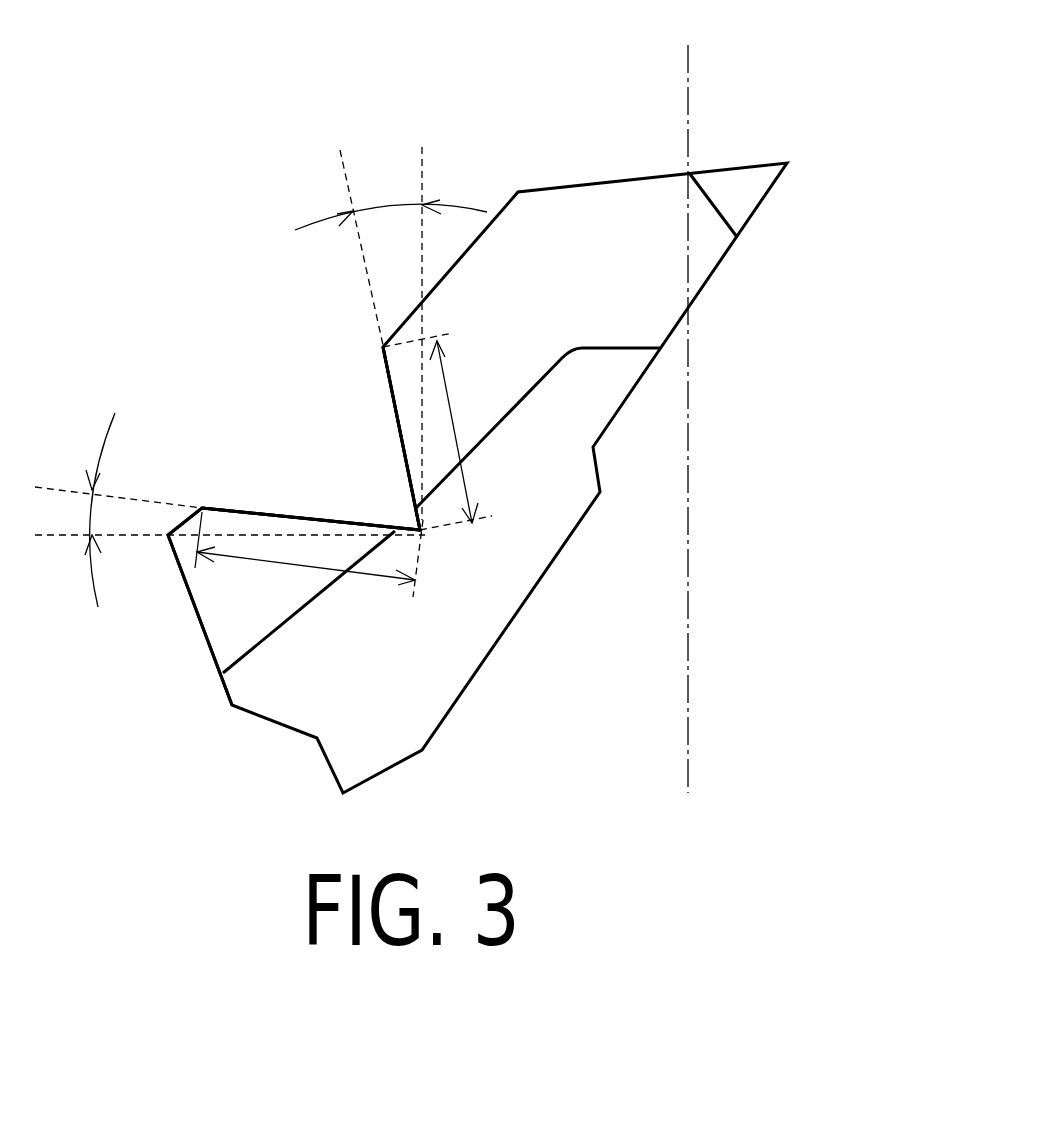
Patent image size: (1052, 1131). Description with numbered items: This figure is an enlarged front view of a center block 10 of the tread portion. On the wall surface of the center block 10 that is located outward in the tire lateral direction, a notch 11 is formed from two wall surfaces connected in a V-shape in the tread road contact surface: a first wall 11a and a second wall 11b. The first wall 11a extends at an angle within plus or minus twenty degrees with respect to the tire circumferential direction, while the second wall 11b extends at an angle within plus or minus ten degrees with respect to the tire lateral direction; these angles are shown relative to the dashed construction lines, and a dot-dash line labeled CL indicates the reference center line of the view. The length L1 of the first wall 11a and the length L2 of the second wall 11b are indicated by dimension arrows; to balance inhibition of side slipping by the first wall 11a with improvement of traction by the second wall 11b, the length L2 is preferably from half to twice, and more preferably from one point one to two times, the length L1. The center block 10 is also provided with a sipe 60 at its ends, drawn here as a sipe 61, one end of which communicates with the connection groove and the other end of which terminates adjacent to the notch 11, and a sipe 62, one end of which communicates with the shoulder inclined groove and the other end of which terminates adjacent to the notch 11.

The center block 10 is at (602, 195).
The notch 11 is at (325, 460).
The first wall 11a is at (397, 430).
The second wall 11b is at (297, 517).
The sipe 60 is at (426, 570).
The sipe 61 is at (500, 510).
The sipe 62 is at (285, 630).
The center line CL is at (687, 402).
The length of the first wall L1 is at (437, 431).
The length of the second wall L2 is at (309, 556).